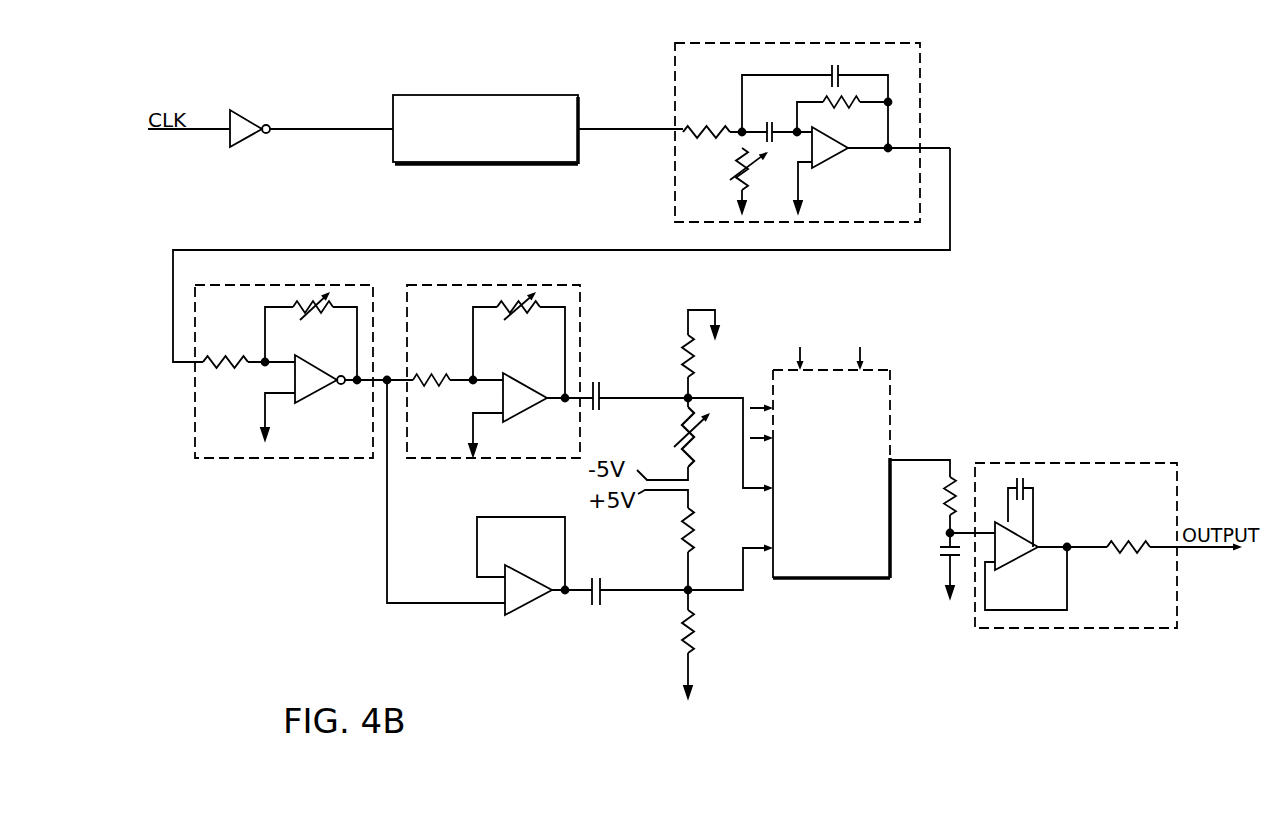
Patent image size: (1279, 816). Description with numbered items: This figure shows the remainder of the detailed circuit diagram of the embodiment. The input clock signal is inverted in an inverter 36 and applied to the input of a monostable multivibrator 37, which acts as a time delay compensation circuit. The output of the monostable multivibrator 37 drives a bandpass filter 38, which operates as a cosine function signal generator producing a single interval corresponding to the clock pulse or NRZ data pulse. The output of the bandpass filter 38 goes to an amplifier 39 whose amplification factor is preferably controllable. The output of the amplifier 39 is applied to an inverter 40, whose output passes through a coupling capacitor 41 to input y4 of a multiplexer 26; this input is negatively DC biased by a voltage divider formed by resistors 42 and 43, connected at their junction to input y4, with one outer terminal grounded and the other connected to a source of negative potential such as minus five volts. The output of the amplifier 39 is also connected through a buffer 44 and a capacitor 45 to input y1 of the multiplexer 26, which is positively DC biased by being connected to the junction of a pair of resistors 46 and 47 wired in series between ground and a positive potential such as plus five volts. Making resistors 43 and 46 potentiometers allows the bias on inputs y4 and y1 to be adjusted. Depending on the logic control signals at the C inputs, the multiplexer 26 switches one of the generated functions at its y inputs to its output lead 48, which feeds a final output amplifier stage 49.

The multiplexer 26 is at (853, 580).
The inverter 36 is at (265, 124).
The monostable multivibrator 37 is at (543, 95).
The bandpass filter 38 is at (734, 43).
The amplifier 39 is at (375, 318).
The inverter 40 is at (581, 313).
The coupling capacitor 41 is at (604, 406).
The resistor 42 is at (686, 357).
The resistor 43 is at (684, 441).
The buffer 44 is at (522, 605).
The capacitor 45 is at (605, 585).
The resistor 46 is at (697, 537).
The resistor 47 is at (698, 637).
The output lead 48 is at (930, 460).
The final output amplifier stage 49 is at (1108, 630).